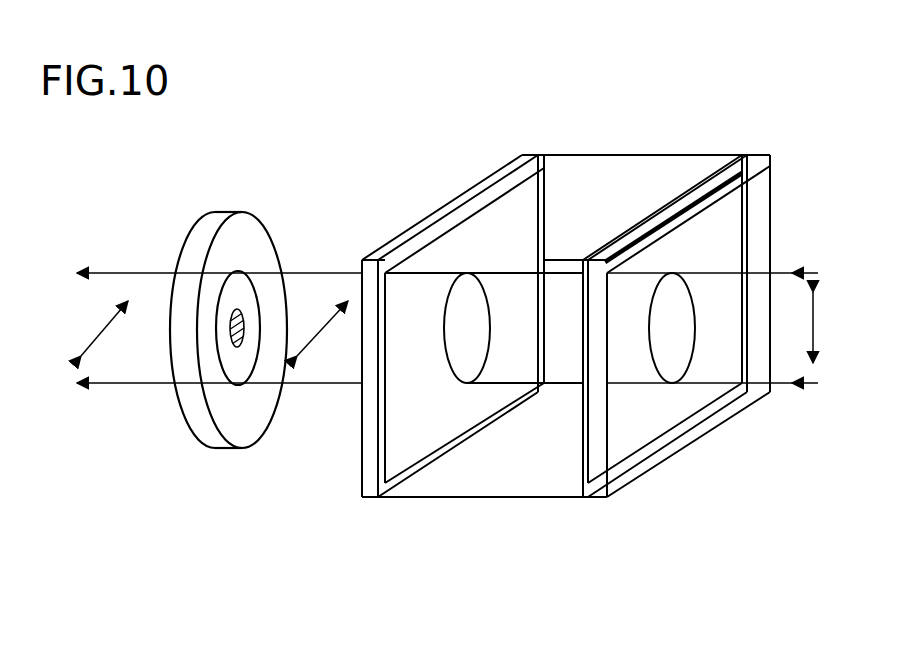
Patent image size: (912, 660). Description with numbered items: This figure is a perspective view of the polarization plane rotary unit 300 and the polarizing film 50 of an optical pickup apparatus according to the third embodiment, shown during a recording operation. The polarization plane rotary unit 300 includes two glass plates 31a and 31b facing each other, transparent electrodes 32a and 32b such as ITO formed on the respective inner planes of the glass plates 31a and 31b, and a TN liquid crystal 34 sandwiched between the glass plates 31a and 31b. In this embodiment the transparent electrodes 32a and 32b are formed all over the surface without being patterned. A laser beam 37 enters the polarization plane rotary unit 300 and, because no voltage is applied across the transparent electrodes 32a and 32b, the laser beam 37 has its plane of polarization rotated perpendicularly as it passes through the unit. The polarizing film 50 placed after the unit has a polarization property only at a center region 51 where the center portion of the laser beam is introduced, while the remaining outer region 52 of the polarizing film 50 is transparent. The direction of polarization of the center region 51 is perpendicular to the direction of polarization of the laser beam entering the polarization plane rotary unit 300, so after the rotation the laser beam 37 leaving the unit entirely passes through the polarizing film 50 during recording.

The polarization plane rotary unit 300 is at (487, 500).
The glass plate 31a is at (600, 497).
The glass plate 31b is at (370, 497).
The transparent electrode 32a is at (640, 445).
The transparent electrode 32b is at (420, 455).
The TN liquid crystal 34 is at (633, 168).
The laser beam 37 is at (447, 363).
The polarizing film 50 is at (238, 348).
The center region 51 is at (238, 306).
The outer region 52 is at (228, 240).